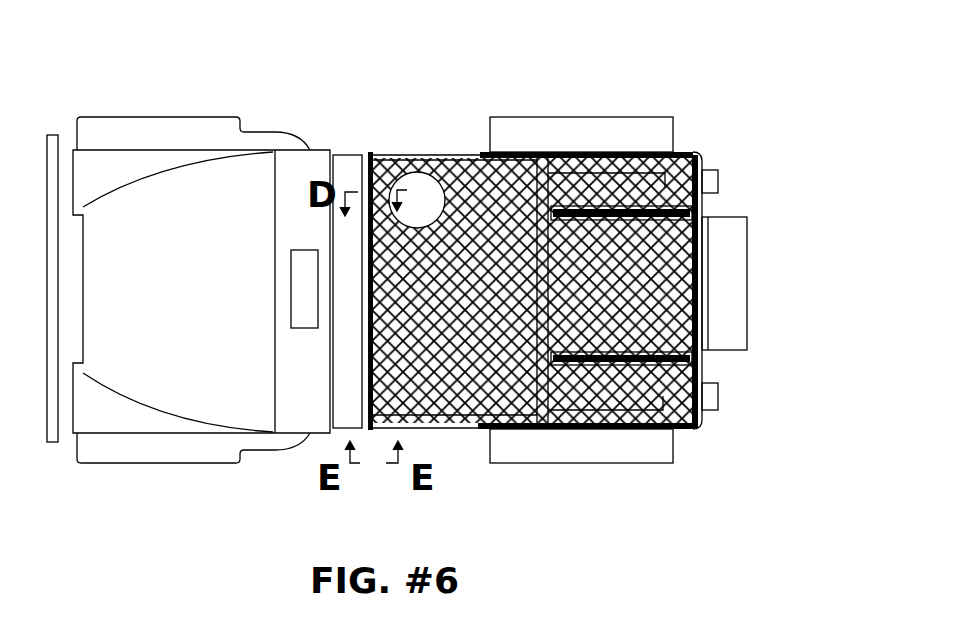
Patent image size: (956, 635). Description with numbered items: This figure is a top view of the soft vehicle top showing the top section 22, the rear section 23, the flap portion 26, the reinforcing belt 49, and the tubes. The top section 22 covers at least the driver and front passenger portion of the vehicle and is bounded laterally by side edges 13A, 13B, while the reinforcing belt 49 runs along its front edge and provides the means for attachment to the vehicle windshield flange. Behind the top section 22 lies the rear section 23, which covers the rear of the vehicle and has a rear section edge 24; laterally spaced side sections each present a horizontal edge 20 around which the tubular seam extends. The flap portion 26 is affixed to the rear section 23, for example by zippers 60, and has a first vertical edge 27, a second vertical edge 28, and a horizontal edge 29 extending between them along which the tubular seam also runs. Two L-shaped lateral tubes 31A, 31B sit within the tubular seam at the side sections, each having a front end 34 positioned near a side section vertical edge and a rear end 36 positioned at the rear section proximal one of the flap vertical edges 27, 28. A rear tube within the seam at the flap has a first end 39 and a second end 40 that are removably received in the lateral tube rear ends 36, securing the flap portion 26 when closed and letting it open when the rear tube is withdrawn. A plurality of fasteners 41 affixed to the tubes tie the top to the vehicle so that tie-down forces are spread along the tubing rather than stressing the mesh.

The side edge 13A is at (433, 428).
The side edge 13B is at (402, 155).
The horizontal edge 20 is at (612, 152).
The top section 22 is at (457, 247).
The rear section 23 is at (593, 297).
The rear section edge 24 is at (703, 323).
The flap portion 26 is at (650, 287).
The first vertical edge 27 is at (620, 352).
The second vertical edge 28 is at (703, 245).
The horizontal edge 29 is at (703, 314).
The L-shaped lateral tube 31A is at (530, 428).
The L-shaped lateral tube 31B is at (557, 155).
The front end 34 is at (480, 152).
The rear end 36 is at (703, 207).
The first end 39 is at (703, 363).
The second end 40 is at (705, 212).
The fasteners 41 is at (653, 428).
The reinforcing belt 49 is at (365, 253).
The zippers 60 is at (697, 153).